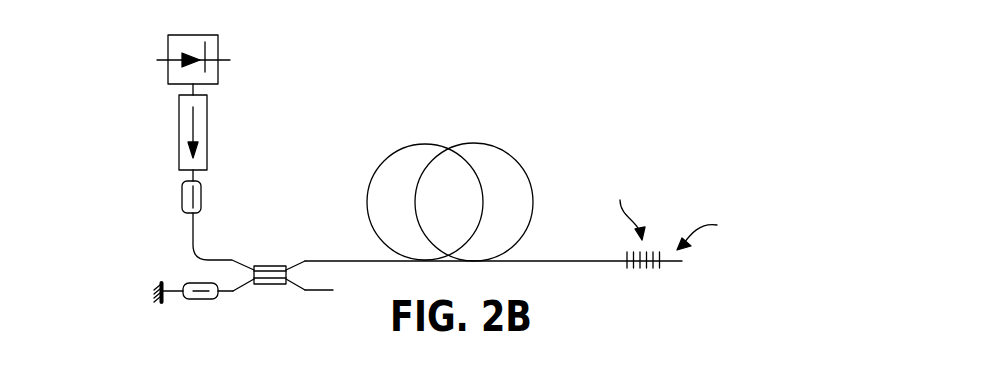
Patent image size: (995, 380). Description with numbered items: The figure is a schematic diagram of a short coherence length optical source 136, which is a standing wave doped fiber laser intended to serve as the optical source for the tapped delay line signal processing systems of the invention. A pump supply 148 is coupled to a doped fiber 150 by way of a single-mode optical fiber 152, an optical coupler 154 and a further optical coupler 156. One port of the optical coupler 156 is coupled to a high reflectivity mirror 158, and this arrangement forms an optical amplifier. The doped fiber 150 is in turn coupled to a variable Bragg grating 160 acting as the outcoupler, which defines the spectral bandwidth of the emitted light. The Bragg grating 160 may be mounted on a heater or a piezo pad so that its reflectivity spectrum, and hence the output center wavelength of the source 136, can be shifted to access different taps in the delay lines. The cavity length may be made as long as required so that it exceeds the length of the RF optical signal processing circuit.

The short coherence length optical source 136 is at (745, 125).
The pump supply 148 is at (153, 46).
The doped fiber 150 is at (317, 261).
The single-mode optical fiber 152 is at (207, 148).
The optical coupler 154 is at (201, 197).
The optical coupler 156 is at (272, 302).
The high reflectivity mirror 158 is at (148, 291).
The Bragg grating 160 is at (636, 290).